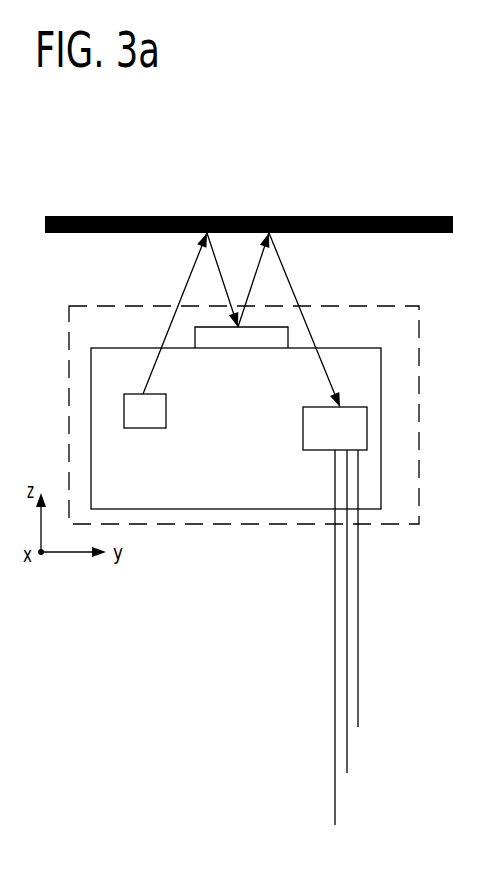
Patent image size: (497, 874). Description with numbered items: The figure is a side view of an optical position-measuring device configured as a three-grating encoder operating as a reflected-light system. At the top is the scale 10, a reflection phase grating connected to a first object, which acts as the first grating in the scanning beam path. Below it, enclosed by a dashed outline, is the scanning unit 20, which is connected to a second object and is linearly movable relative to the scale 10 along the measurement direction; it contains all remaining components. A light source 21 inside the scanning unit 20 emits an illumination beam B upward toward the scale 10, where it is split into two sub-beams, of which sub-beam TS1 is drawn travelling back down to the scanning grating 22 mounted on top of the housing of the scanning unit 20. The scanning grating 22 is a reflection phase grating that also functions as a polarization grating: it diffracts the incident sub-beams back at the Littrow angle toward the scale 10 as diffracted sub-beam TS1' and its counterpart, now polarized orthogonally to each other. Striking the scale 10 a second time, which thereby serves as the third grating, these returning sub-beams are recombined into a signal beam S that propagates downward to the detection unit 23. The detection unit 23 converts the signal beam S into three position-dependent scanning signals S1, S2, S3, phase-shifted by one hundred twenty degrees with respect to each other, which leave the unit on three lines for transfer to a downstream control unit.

The scale 10 is at (407, 215).
The scanning unit 20 is at (173, 526).
The light source 21 is at (142, 412).
The scanning grating 22 is at (207, 337).
The detection unit 23 is at (317, 437).
The illumination beam B is at (192, 277).
The signal beam S is at (290, 274).
The sub-beam TS1 is at (202, 225).
The diffracted sub-beam TS1' is at (273, 240).
The scanning signal S1 is at (373, 598).
The scanning signal S2 is at (360, 621).
The scanning signal S3 is at (349, 648).